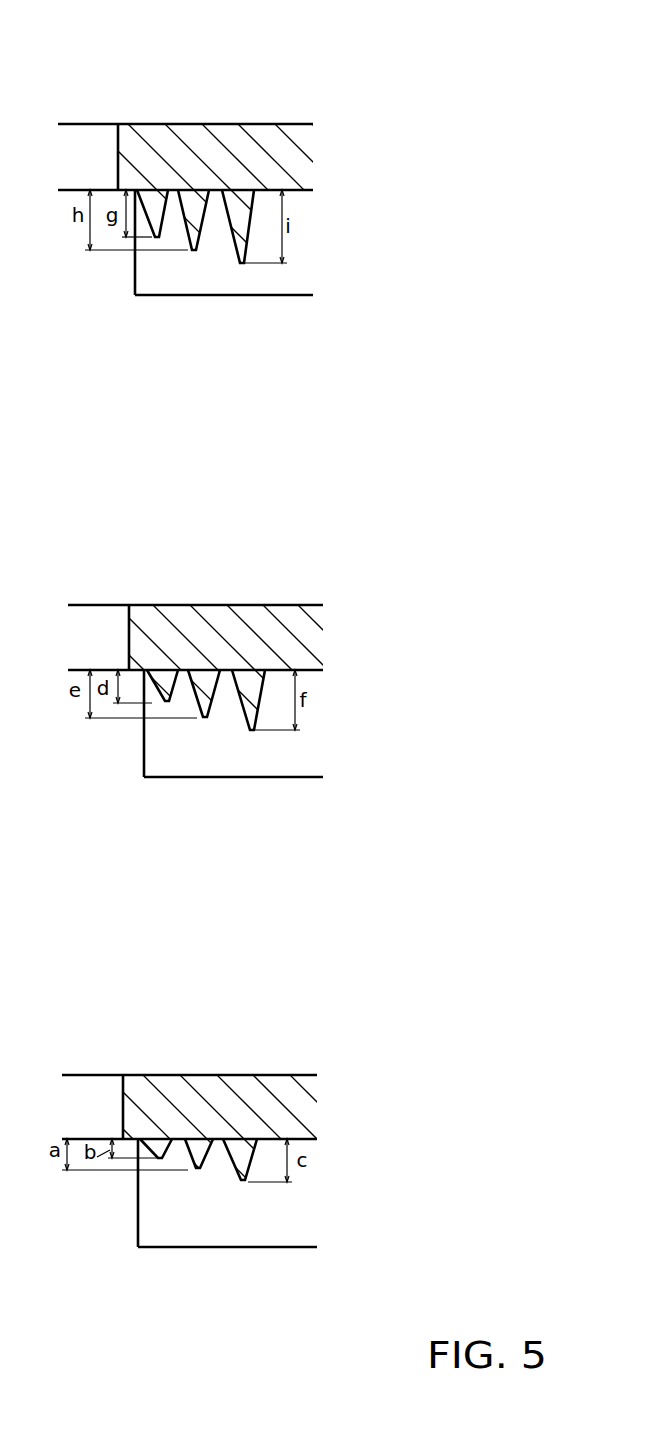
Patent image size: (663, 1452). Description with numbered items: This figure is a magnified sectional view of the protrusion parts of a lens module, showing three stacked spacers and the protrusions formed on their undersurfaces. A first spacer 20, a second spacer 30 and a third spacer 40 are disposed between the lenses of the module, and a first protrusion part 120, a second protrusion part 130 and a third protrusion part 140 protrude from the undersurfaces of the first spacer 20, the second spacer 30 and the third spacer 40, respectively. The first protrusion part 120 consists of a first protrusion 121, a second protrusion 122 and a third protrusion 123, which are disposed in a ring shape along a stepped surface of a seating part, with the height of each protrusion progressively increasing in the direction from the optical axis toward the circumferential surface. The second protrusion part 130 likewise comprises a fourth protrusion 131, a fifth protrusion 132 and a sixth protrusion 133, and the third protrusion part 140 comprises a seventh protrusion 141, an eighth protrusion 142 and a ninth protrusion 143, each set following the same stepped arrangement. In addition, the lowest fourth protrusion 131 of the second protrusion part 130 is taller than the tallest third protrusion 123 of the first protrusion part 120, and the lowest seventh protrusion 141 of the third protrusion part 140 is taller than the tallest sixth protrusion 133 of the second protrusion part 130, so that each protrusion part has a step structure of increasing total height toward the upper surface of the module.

The first spacer 20 is at (198, 1090).
The first protrusion part 120 is at (187, 1262).
The first protrusion 121 is at (156, 1162).
The second protrusion 122 is at (201, 1170).
The third protrusion 123 is at (267, 1232).
The second spacer 30 is at (203, 622).
The second protrusion part 130 is at (197, 800).
The fourth protrusion 131 is at (163, 702).
The fifth protrusion 132 is at (205, 719).
The sixth protrusion 133 is at (277, 769).
The third spacer 40 is at (191, 143).
The third protrusion part 140 is at (191, 324).
The seventh protrusion 141 is at (155, 239).
The eighth protrusion 142 is at (194, 251).
The ninth protrusion 143 is at (268, 296).